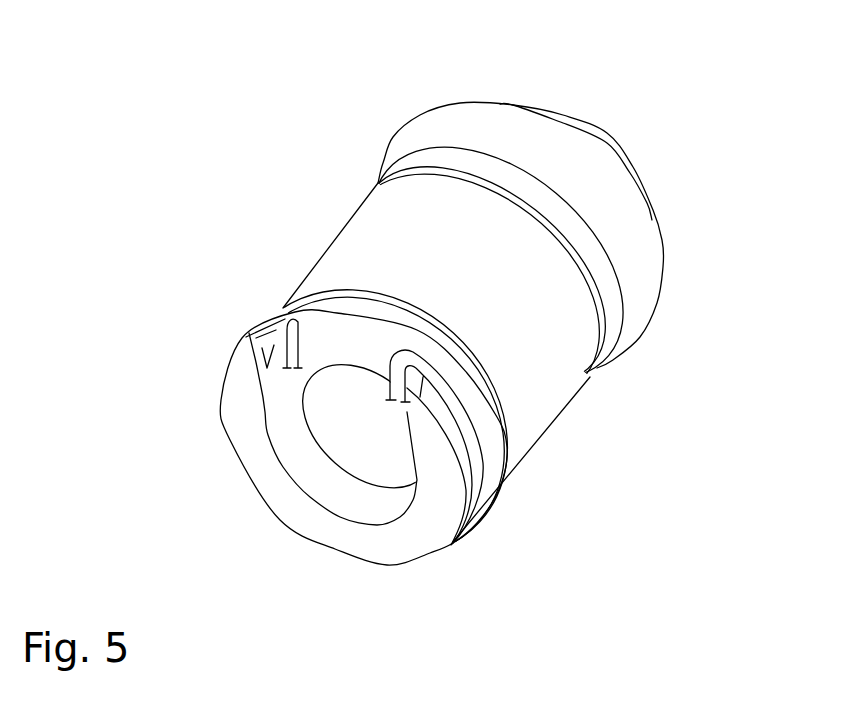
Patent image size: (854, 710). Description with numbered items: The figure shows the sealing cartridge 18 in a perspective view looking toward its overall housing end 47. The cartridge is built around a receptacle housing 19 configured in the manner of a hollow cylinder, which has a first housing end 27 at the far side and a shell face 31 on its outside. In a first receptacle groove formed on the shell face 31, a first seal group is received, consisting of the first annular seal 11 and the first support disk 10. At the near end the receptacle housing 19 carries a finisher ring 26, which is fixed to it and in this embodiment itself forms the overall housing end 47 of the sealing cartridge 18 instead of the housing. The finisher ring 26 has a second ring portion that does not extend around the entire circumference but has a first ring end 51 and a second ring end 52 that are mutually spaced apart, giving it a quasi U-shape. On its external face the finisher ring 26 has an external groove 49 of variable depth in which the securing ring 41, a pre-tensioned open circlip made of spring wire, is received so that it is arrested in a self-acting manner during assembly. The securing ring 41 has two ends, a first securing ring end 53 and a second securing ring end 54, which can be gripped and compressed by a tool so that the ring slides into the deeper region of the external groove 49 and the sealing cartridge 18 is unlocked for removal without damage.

The sealing cartridge 18 is at (556, 72).
The first housing end 27 is at (606, 143).
The first annular seal 11 is at (662, 268).
The first support disk 10 is at (612, 307).
The receptacle housing 19 is at (565, 370).
The shell face 31 is at (545, 433).
The external groove 49 is at (472, 461).
The securing ring 41 is at (481, 513).
The overall housing end 47 is at (408, 548).
The finisher ring 26 is at (236, 392).
The second ring end 52 is at (264, 358).
The second securing ring end 54 is at (292, 370).
The first securing ring end 53 is at (397, 401).
The first ring end 51 is at (406, 411).